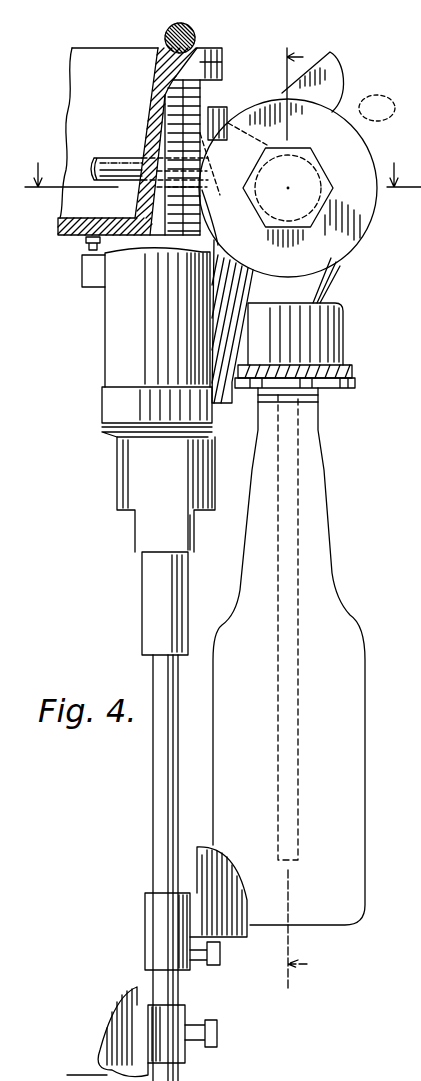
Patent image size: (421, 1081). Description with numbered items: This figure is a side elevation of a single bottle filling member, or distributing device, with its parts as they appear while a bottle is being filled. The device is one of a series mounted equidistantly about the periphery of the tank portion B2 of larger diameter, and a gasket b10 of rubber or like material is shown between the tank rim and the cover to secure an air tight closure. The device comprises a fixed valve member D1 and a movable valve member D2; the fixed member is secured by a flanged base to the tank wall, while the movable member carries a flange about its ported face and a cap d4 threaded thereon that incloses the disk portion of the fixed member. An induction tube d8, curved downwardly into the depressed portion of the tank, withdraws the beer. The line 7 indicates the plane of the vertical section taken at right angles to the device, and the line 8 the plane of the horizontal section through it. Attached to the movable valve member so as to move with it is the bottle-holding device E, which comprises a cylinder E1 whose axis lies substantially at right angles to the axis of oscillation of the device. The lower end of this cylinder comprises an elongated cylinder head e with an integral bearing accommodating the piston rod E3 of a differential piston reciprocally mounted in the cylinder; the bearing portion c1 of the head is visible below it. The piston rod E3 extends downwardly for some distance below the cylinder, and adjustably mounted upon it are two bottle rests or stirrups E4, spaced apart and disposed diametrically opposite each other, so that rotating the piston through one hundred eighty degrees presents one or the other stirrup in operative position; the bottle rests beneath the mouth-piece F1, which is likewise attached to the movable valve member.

The tank portion B2 is at (140, 149).
The gasket b10 is at (166, 40).
The induction tube d8 is at (108, 158).
The section line 8- 8 is at (218, 170).
The section line 7- 7 is at (294, 518).
The cap d4 is at (288, 164).
The fixed valve member D1 is at (267, 145).
The movable valve member D2 is at (332, 280).
The cup F1 is at (337, 342).
The cylinder E1 is at (146, 317).
The bottle-holding device E is at (103, 408).
The cylinder head e is at (166, 494).
The sleeve c1 is at (145, 615).
The piston rod E3 is at (160, 777).
The bottle rests or stirrups E4 is at (87, 1003).